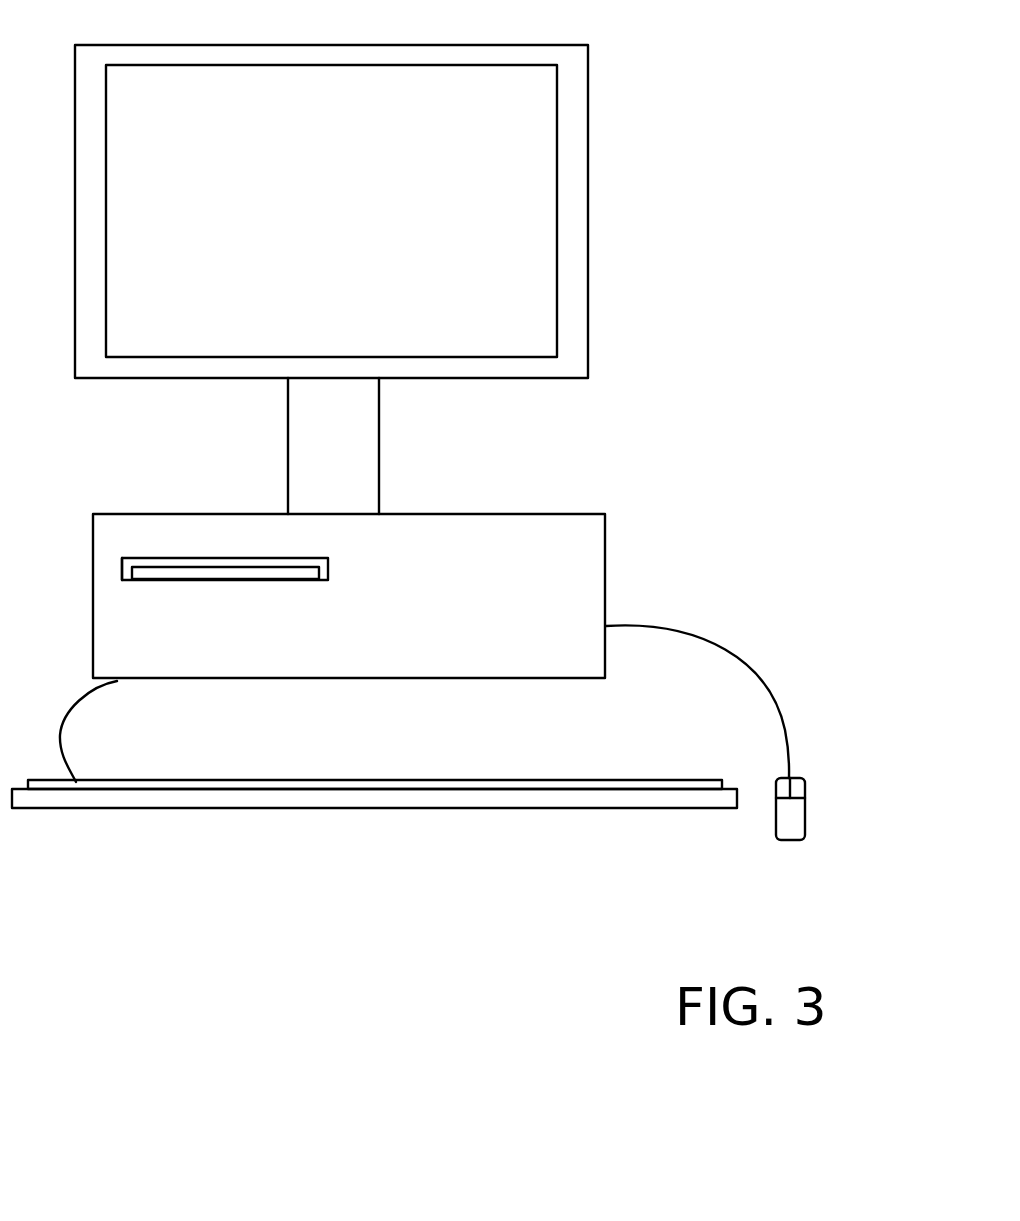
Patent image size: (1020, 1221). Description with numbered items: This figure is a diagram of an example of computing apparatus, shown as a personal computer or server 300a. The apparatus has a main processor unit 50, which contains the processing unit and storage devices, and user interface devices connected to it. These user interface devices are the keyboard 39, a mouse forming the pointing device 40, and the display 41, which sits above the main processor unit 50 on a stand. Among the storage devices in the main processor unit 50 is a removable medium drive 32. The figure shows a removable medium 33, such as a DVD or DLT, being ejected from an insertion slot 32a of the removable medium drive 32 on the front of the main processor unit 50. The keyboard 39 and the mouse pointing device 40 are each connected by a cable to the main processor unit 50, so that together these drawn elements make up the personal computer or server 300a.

The display 41 is at (588, 158).
The main processor unit 50 is at (571, 514).
The removable medium drive 32 is at (175, 557).
The insertion slot 32a is at (130, 553).
The removable medium 33 is at (203, 567).
The keyboard 39 is at (545, 786).
The pointing device 40 is at (806, 805).
The personal computer or server 300a is at (731, 468).